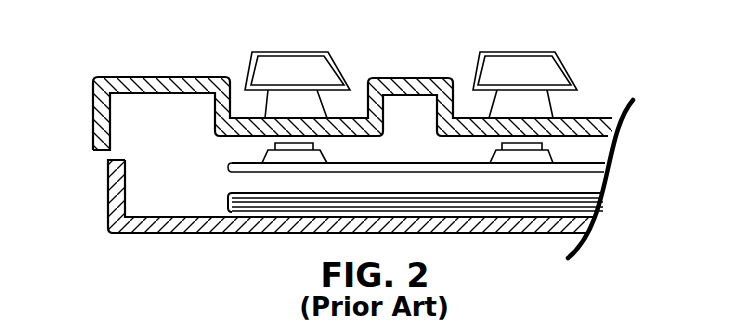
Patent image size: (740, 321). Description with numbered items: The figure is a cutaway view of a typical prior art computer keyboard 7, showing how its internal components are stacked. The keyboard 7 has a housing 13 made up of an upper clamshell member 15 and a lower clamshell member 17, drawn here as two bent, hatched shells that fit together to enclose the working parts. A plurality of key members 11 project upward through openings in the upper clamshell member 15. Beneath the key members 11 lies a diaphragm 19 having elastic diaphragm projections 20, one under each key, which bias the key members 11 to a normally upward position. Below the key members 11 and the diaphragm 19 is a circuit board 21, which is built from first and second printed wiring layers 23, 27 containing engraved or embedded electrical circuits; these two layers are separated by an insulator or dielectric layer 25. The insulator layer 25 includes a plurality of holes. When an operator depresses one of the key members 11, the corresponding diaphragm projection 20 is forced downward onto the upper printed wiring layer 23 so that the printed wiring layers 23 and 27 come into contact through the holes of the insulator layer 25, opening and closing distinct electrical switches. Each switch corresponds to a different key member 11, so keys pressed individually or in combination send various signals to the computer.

The keyboard 7 is at (611, 61).
The key members 11 is at (298, 50).
The housing 13 is at (108, 180).
The upper clamshell member 15 is at (319, 105).
The lower clamshell member 17 is at (146, 235).
The diaphragm 19 is at (233, 166).
The diaphragm projections 20 is at (493, 162).
The circuit board 21 is at (421, 206).
The first printed wiring layer 23 is at (603, 196).
The insulator layer 25 is at (603, 200).
The second printed wiring layer 27 is at (603, 212).